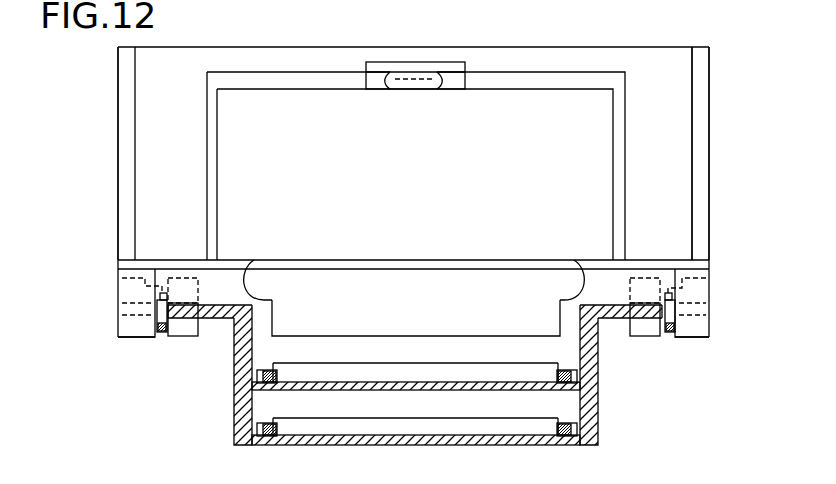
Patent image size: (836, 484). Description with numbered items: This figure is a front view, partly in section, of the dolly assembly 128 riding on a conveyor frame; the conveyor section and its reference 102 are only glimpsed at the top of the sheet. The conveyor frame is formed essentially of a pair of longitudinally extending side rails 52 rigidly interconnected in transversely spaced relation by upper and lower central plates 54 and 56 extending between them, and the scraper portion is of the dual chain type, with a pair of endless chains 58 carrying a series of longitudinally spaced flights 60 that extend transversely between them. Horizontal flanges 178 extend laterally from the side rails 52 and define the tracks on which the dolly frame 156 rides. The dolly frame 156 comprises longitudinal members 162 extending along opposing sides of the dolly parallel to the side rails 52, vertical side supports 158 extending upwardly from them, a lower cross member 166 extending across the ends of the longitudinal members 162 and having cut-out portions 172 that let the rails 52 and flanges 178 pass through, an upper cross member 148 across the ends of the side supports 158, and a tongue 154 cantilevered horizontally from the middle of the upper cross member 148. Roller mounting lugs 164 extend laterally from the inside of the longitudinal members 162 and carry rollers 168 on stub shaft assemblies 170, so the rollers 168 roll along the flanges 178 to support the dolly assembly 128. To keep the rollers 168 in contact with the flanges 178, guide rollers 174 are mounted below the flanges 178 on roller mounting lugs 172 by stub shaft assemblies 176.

The assembly 102 is at (474, 0).
The dolly assembly 128 is at (118, 60).
The upper cross member 148 is at (573, 47).
The tongue 154 is at (466, 76).
The dolly frame 156 is at (710, 90).
The vertical side supports 158 is at (118, 110).
The longitudinal members 162 is at (118, 282).
The roller mounting lugs 164 is at (146, 278).
The lower cross member 166 is at (447, 260).
The rollers 168 is at (191, 278).
The stub shaft assemblies 170 is at (160, 297).
The roller mounting lugs 172 is at (254, 260).
The guide rollers 174 is at (176, 338).
The stub shaft assemblies 176 is at (158, 335).
The horizontal flanges 178 is at (215, 320).
The side rails 52 is at (236, 445).
The upper central plate 54 is at (413, 388).
The lower central plate 56 is at (293, 440).
The endless chains 58 is at (265, 370).
The flights 60 is at (415, 328).